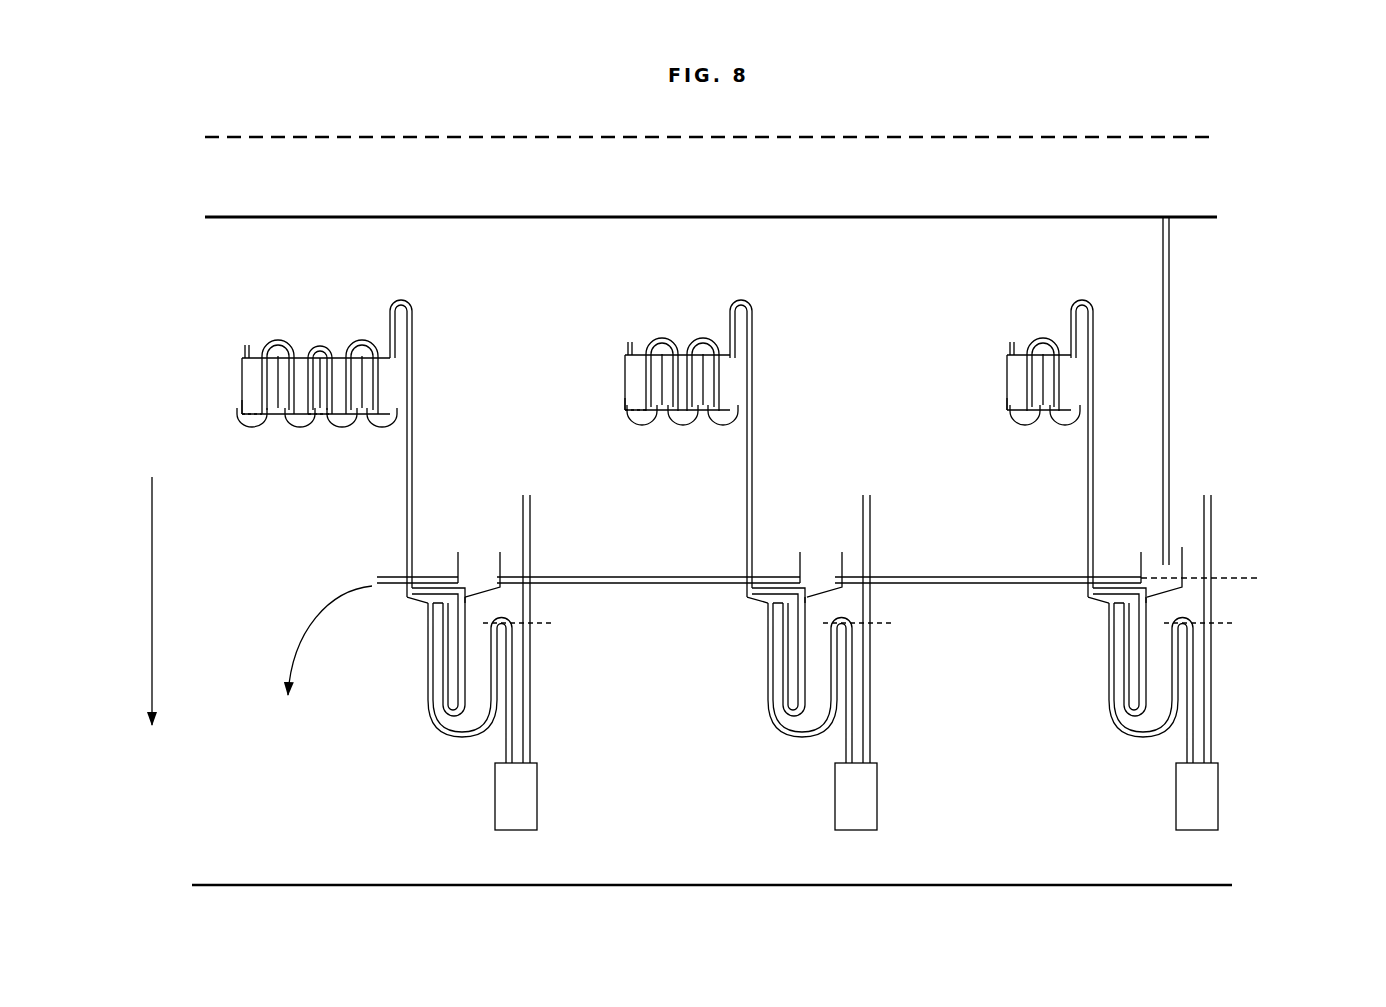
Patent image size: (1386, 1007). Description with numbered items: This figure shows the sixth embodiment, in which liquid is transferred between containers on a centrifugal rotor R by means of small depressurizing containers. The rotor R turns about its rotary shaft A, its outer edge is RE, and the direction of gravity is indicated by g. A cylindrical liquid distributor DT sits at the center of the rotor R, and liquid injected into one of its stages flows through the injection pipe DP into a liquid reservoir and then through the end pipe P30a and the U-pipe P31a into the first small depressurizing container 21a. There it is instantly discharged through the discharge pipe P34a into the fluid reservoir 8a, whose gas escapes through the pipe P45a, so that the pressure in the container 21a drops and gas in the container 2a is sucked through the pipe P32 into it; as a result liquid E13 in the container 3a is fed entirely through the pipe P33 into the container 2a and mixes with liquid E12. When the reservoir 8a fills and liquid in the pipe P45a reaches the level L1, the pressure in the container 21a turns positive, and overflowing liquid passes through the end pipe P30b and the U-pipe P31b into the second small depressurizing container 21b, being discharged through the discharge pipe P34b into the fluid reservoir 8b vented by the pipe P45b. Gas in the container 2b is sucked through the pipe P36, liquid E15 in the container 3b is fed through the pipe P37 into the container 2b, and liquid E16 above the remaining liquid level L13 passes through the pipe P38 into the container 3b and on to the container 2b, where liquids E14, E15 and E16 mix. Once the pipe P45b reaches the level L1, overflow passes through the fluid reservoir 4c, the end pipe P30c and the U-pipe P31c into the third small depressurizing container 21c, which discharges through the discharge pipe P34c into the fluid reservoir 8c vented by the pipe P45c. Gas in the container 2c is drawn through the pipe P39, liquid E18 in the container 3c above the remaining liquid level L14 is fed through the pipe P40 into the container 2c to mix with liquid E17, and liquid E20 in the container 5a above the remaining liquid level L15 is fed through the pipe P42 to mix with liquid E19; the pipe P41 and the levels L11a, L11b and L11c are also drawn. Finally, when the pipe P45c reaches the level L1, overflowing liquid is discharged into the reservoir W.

The rotary shaft A is at (1216, 137).
The liquid distributor DT is at (1220, 217).
The outer edge RE is at (1243, 885).
The injection pipe DP is at (1172, 313).
The centrifugal rotor R is at (880, 275).
The gravity direction g is at (152, 585).
The reservoir W is at (323, 658).
The liquid level L1 is at (1261, 578).
The container 5a is at (258, 431).
The container 3c is at (342, 431).
The container 2c is at (382, 431).
The pipe P42 is at (277, 336).
The pipe P41 is at (320, 342).
The pipe P40 is at (361, 336).
The pipe P39 is at (404, 298).
The liquid E19 is at (278, 409).
The liquid E20 is at (240, 409).
The liquid E18 is at (355, 411).
The liquid E17 is at (398, 411).
The remaining liquid level L15 is at (240, 429).
The remaining liquid level L14 is at (321, 425).
The container 3b is at (683, 429).
The container 2b is at (723, 429).
The pipe P38 is at (661, 334).
The pipe P37 is at (703, 334).
The pipe P36 is at (744, 296).
The liquid E16 is at (624, 407).
The liquid E15 is at (699, 409).
The liquid E14 is at (735, 409).
The remaining liquid level L13 is at (620, 428).
The container 3a is at (1025, 429).
The container 2a is at (1065, 429).
The pipe P33 is at (1043, 334).
The pipe P32 is at (1085, 296).
The liquid E12 is at (1043, 409).
The liquid E13 is at (1009, 409).
The small depressurizing container 21c is at (406, 608).
The discharge pipe P34c is at (459, 742).
The U-pipe P31c is at (435, 724).
The pipe P45c is at (534, 553).
The fluid reservoir 8c is at (541, 803).
The liquid level L11c is at (551, 627).
The fluid reservoir 4c is at (500, 545).
The end pipe P30c is at (473, 607).
The small depressurizing container 21b is at (746, 608).
The discharge pipe P34b is at (799, 742).
The U-pipe P31b is at (775, 724).
The pipe P45b is at (874, 548).
The fluid reservoir 8b is at (881, 803).
The liquid level L11b is at (891, 627).
The end pipe P30b is at (813, 607).
The small depressurizing container 21a is at (1087, 608).
The discharge pipe P34a is at (1140, 742).
The U-pipe P31a is at (1116, 724).
The pipe P45a is at (1215, 553).
The fluid reservoir 8a is at (1222, 803).
The liquid level L11a is at (1223, 627).
The end pipe P30a is at (1151, 607).